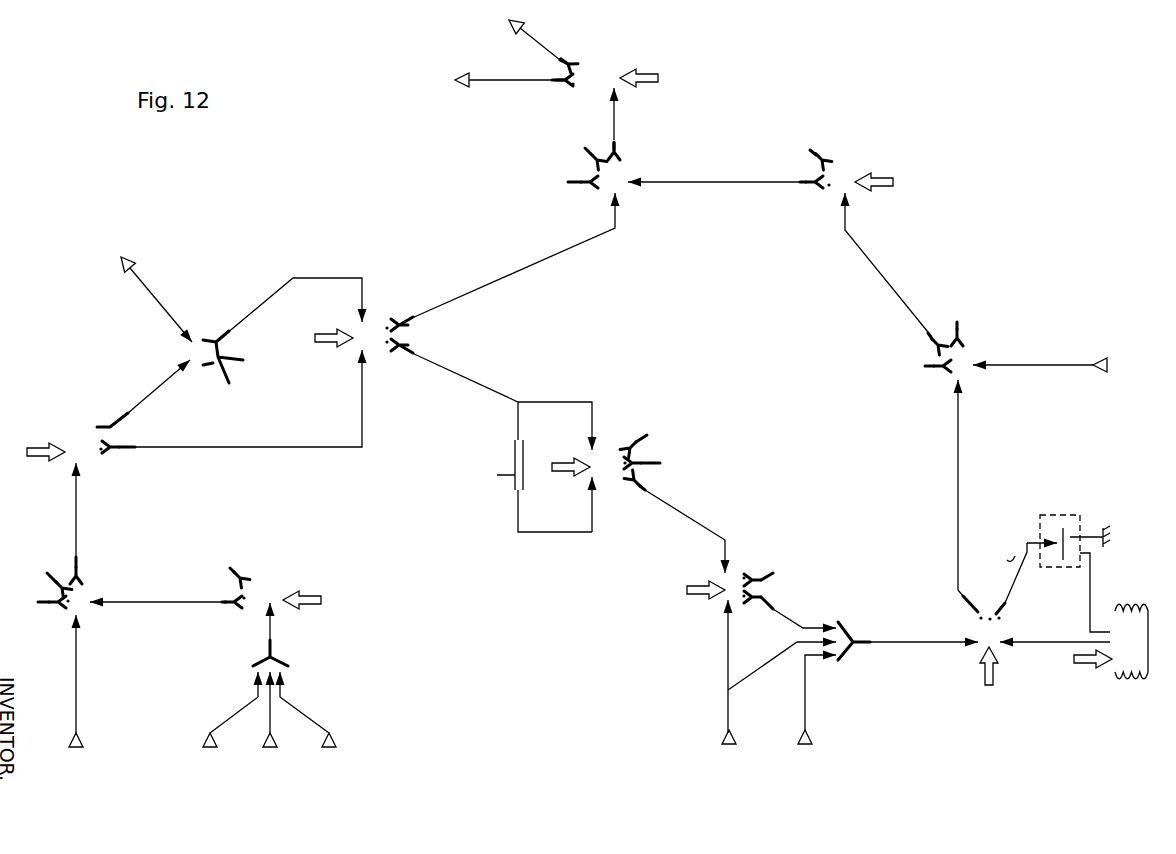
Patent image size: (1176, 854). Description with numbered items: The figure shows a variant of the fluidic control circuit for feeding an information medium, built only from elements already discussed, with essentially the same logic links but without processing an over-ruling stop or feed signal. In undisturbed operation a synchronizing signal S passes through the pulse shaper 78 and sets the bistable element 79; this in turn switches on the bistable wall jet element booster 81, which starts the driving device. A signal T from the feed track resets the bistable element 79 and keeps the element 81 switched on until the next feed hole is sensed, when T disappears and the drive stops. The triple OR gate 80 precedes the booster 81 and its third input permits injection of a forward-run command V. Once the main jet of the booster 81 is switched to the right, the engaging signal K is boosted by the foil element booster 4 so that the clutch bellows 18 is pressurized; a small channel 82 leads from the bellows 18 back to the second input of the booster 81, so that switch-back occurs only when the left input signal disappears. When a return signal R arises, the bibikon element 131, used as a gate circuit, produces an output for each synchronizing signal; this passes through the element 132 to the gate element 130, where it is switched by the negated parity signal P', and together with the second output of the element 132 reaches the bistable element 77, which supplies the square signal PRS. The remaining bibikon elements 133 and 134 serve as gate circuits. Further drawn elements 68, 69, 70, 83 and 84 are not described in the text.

The output stage 84 is at (577, 77).
The AND gate 83 is at (866, 239).
The bibikon element 134 is at (614, 230).
The bibikon element 133 is at (1015, 456).
The gate element 130 is at (236, 325).
The bistable element 77 is at (274, 375).
The element 132 is at (81, 482).
The bibikon element 131 is at (131, 662).
The inverter 70 is at (271, 595).
The OR gate 69 is at (292, 668).
The signal inputs 68 is at (294, 733).
The pulse shaper 78 is at (536, 442).
The bistable element 79 is at (709, 549).
The triple OR gate 80 is at (849, 677).
The bistable wall jet element booster 81 is at (998, 612).
The channel 82 is at (1064, 649).
The clutch bellows 18 is at (1111, 624).
The foil element booster 4 is at (1053, 520).